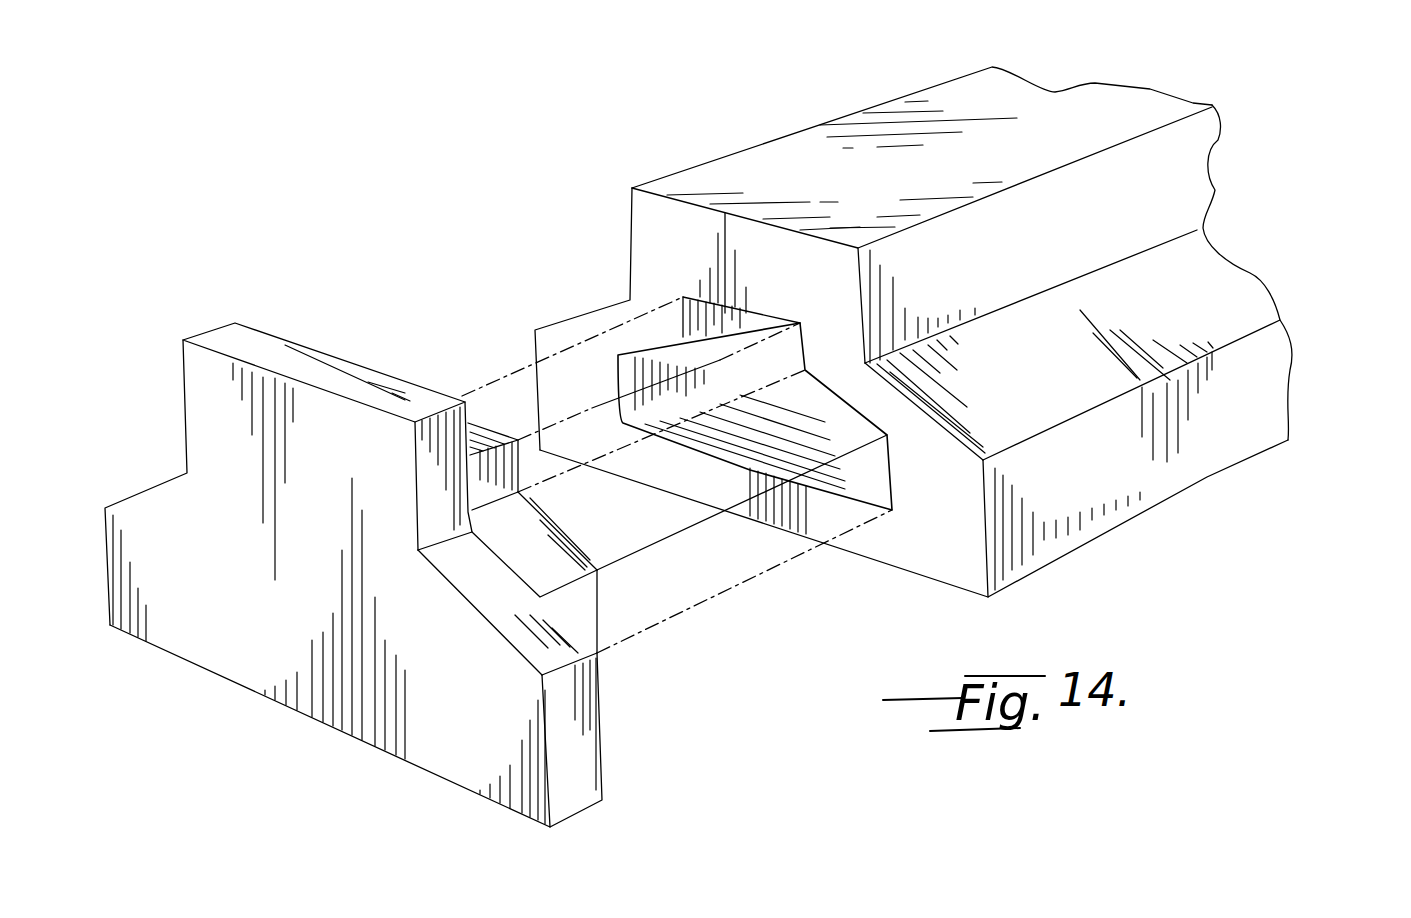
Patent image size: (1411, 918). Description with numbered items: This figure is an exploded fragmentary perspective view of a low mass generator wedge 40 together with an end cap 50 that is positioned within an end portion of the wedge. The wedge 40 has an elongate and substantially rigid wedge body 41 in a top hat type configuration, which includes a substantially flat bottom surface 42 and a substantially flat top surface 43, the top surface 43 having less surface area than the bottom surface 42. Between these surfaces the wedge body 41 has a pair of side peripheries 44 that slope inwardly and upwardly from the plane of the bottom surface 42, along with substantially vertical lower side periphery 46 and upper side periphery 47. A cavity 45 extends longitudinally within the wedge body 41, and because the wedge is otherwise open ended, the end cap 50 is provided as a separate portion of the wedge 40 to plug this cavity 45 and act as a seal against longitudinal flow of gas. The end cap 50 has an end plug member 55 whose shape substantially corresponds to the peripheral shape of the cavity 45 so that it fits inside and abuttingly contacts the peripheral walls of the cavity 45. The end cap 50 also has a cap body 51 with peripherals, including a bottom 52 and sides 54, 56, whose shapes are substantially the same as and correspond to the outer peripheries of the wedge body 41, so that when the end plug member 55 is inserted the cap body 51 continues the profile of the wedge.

The wedge 40 is at (1340, 147).
The wedge body 41 is at (930, 555).
The bottom surface 42 is at (840, 553).
The top surface 43 is at (1007, 117).
The side peripheries 44 is at (1238, 300).
The cavity 45 is at (695, 351).
The lower side periphery 46 is at (1260, 412).
The upper side periphery 47 is at (1190, 192).
The end cap 50 is at (298, 290).
The cap body 51 is at (235, 610).
The bottom 52 is at (325, 722).
The side 54 is at (597, 655).
The end plug member 55 is at (492, 433).
The side 56 is at (592, 762).